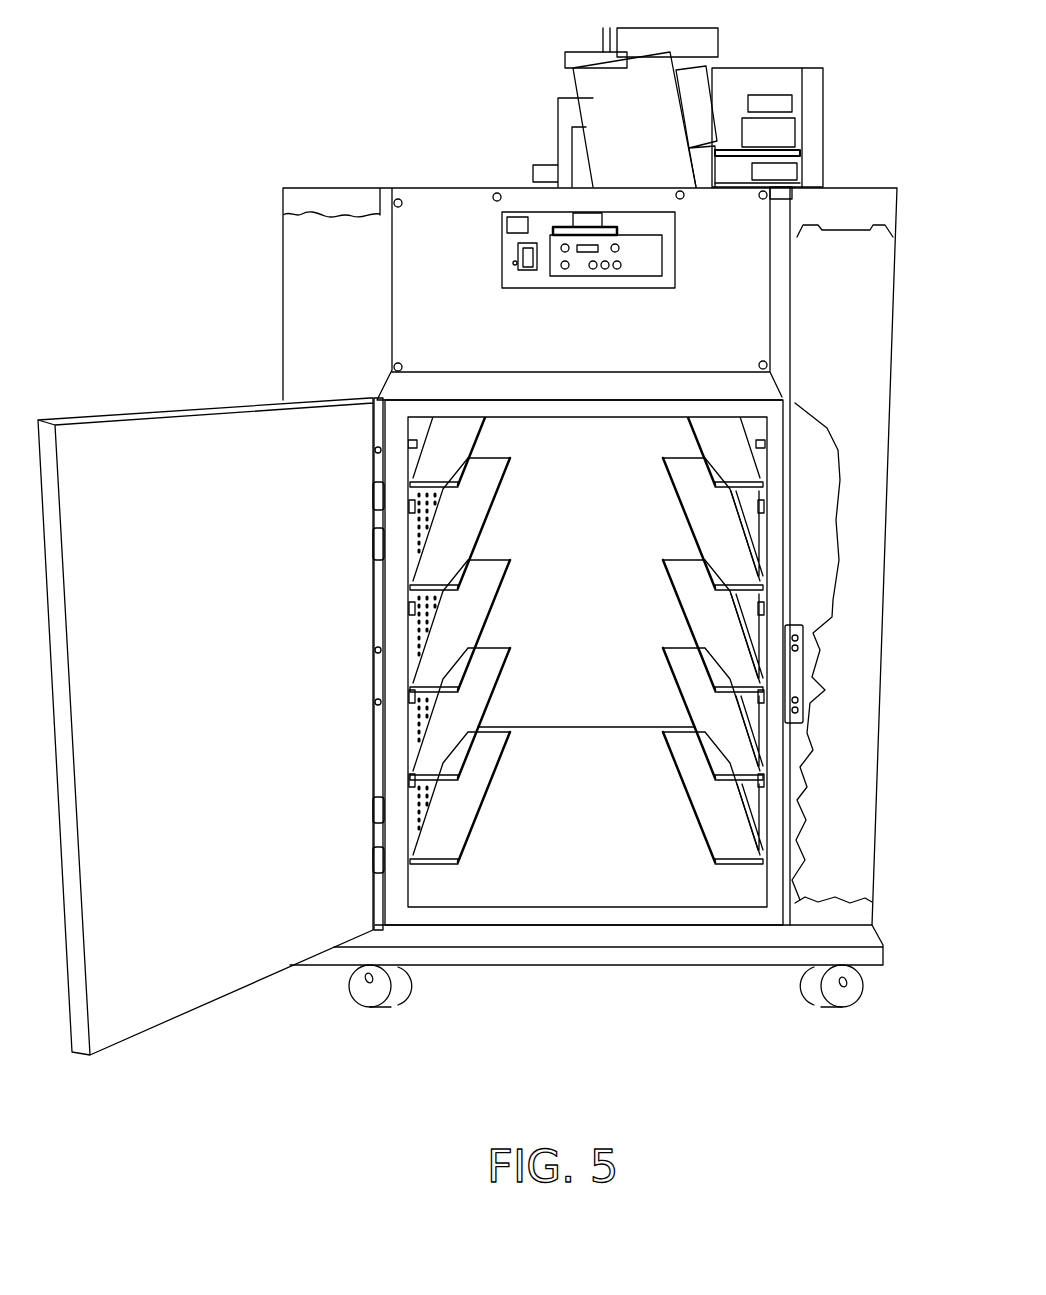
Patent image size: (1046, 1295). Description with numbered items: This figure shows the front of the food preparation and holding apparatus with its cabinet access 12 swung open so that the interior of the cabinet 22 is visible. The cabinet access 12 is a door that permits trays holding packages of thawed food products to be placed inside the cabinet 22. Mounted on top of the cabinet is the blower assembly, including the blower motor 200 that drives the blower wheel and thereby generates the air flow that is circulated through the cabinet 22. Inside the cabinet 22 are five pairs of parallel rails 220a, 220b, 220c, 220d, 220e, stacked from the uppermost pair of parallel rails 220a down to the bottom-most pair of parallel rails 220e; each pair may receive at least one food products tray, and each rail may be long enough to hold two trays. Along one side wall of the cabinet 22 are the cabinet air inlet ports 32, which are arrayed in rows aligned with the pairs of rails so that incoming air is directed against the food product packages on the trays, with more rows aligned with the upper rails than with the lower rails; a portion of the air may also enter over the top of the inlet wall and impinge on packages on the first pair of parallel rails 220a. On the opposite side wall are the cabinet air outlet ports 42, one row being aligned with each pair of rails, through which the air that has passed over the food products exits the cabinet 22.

The blower motor 200 is at (578, 97).
The cabinet access 12 is at (170, 412).
The cabinet 22 is at (597, 658).
The first pair of parallel rails 220a is at (712, 440).
The pair of parallel rails 220b is at (697, 493).
The pair of parallel rails 220c is at (690, 585).
The pair of parallel rails 220d is at (690, 685).
The bottom-most pair of parallel rails 220e is at (695, 795).
The cabinet air inlet ports 32 is at (435, 513).
The cabinet air outlet ports 42 is at (750, 513).